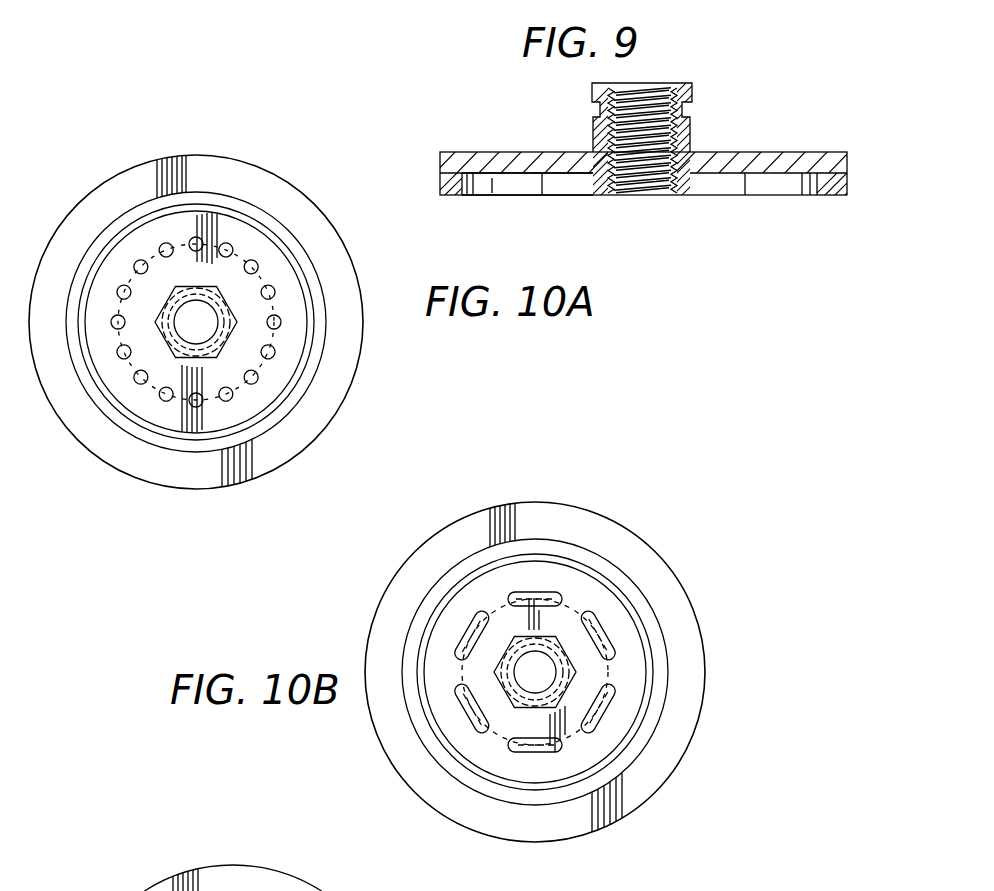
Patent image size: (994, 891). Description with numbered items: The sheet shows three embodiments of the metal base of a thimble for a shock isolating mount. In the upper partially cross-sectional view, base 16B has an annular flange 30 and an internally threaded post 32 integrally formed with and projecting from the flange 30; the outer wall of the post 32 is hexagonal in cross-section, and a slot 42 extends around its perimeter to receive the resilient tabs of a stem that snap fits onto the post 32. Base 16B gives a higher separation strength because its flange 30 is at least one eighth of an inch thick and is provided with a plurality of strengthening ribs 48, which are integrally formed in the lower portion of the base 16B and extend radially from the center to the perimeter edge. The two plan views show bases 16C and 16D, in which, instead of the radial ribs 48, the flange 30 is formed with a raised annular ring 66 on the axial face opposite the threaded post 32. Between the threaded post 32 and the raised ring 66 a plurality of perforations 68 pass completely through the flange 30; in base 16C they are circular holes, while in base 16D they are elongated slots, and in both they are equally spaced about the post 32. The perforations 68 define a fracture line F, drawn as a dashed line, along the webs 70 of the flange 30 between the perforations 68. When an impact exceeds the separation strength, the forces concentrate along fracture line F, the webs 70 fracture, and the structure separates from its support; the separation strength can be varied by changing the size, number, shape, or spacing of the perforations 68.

In FIG. 9, the base 16B is at (650, 143).
In FIG. 10A, the base 16C is at (230, 352).
In FIG. 10B, the base 16D is at (560, 692).
In FIG. 9, the annular flange 30 is at (785, 160).
In FIG. 10A, the annular flange 30 is at (140, 477).
In FIG. 10B, the annular flange 30 is at (487, 830).
In FIG. 9, the internally threaded post 32 is at (647, 125).
In FIG. 10A, the internally threaded post 32 is at (238, 324).
In FIG. 10B, the internally threaded post 32 is at (560, 687).
In FIG. 9, the slot 42 is at (692, 106).
In FIG. 9, the strengthening ribs 48 is at (524, 173).
In FIG. 10A, the raised annular ring 66 is at (313, 353).
In FIG. 10B, the raised annular ring 66 is at (657, 692).
In FIG. 10A, the perforations 68 is at (250, 264).
In FIG. 10B, the perforations 68 is at (600, 633).
In FIG. 10A, the webs 70 is at (206, 398).
In FIG. 10B, the webs 70 is at (578, 740).
In FIG. 10A, the fracture line F is at (270, 305).
In FIG. 10B, the fracture line F is at (610, 670).